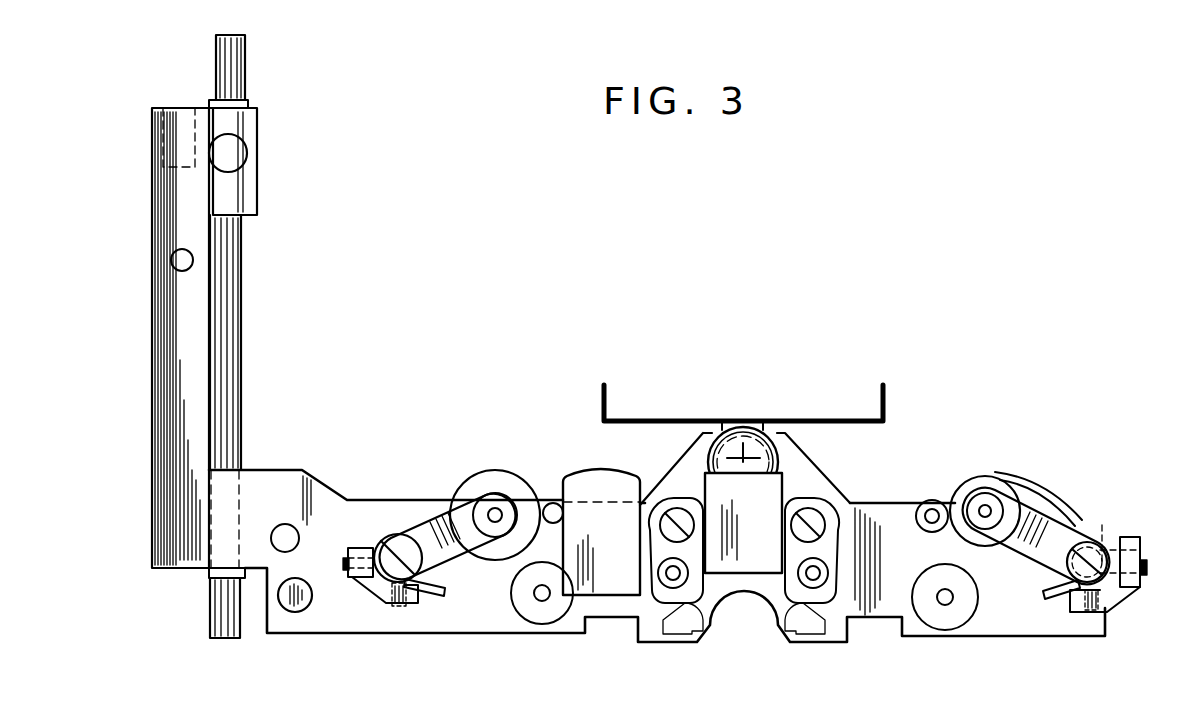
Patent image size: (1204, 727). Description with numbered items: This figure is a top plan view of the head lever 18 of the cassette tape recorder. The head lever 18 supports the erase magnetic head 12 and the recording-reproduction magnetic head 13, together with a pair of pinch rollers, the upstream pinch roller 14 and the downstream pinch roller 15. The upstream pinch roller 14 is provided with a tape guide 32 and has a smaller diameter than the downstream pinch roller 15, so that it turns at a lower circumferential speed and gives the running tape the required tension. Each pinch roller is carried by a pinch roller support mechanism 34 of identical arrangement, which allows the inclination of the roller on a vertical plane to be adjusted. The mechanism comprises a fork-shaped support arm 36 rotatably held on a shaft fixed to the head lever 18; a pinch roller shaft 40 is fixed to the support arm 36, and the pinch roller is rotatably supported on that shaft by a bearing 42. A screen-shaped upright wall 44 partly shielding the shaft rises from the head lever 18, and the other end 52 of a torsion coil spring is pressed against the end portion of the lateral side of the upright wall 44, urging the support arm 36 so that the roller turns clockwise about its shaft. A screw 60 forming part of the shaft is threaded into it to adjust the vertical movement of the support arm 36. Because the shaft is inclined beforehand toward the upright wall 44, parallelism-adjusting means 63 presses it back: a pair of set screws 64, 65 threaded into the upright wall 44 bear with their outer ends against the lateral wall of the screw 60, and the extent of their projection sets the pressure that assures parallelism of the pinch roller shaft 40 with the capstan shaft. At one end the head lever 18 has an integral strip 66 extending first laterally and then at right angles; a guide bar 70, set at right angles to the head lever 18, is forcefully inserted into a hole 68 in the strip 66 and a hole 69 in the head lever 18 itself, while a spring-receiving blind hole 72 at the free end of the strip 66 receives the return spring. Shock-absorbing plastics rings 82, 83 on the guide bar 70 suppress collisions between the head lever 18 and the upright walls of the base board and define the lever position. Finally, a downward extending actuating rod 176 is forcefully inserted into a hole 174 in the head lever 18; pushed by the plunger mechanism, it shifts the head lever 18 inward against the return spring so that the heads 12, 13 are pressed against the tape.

The erase magnetic head 12 is at (782, 486).
The recording-reproduction magnetic head 13 is at (616, 487).
The upstream pinch roller 14 is at (961, 496).
The downstream pinch roller 15 is at (481, 484).
The head lever 18 is at (378, 498).
The tape guide 32 is at (1015, 474).
The pinch roller support mechanism 34 is at (461, 557).
The support arm 36 is at (432, 527).
The pinch roller shaft 40 is at (502, 512).
The bearing 42 is at (505, 493).
The upright wall 44 is at (366, 583).
The other end of torsion coil spring 52 is at (436, 592).
The screw 60 is at (1103, 525).
The parallelism-adjusting means 63 is at (1146, 583).
The set screw 64 is at (388, 604).
The set screw 65 is at (343, 564).
The integral strip 66 is at (160, 298).
The hole 68 is at (245, 188).
The hole 69 is at (236, 497).
The guide bar 70 is at (240, 300).
The spring-receiving blind hole 72 is at (167, 124).
The shock-absorbing plastics ring 82 is at (250, 103).
The shock-absorbing plastics ring 83 is at (209, 575).
The hole 174 is at (291, 611).
The actuating rod 176 is at (304, 611).